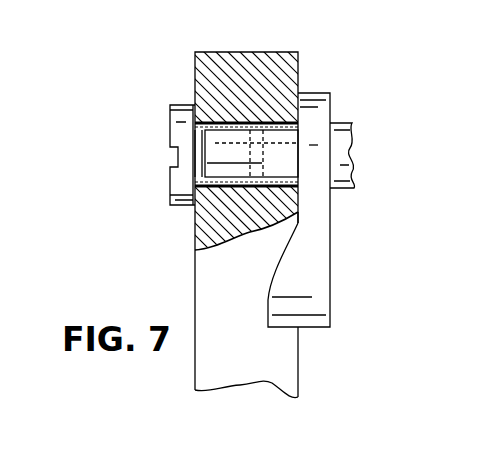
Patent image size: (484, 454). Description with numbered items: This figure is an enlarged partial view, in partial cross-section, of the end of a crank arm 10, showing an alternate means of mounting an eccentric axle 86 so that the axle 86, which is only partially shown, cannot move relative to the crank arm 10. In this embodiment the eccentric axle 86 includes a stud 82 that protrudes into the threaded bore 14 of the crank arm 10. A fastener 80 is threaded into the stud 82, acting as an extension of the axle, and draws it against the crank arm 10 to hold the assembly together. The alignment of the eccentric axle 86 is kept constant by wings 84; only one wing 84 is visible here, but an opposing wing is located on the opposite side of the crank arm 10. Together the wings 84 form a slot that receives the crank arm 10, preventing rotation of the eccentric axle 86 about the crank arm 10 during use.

The crank arm 10 is at (237, 52).
The threaded bore 14 is at (206, 124).
The fastener 80 is at (172, 185).
The stud 82 is at (275, 153).
The wings 84 is at (272, 297).
The eccentric axle 86 is at (352, 162).